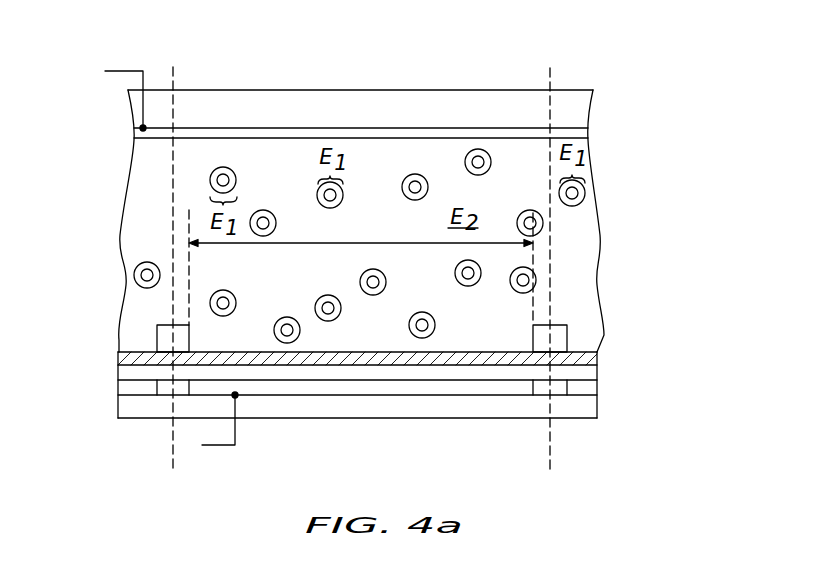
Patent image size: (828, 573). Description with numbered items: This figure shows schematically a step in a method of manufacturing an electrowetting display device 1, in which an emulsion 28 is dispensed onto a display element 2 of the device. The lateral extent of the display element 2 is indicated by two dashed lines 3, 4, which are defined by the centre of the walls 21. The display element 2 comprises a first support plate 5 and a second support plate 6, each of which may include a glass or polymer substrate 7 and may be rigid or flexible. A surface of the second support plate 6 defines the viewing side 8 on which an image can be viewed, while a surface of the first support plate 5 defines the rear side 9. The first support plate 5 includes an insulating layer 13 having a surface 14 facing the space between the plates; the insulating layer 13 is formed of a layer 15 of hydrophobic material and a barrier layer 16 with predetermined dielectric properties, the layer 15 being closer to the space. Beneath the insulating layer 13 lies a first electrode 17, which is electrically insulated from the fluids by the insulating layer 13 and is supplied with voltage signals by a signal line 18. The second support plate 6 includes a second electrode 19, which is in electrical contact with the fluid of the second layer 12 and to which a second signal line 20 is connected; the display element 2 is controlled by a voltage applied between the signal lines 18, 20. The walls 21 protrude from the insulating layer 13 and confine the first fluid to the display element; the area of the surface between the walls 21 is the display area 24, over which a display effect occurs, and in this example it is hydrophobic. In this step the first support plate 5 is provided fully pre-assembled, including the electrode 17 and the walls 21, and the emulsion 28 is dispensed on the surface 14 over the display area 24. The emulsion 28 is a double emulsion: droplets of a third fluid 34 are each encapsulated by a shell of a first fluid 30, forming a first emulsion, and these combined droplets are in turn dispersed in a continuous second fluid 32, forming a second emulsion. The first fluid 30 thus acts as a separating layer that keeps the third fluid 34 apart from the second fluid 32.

The electrowetting display device 1 is at (373, 196).
The display element 2 is at (360, 82).
The dashed line 3 is at (173, 73).
The dashed line 4 is at (550, 72).
The first support plate 5 is at (403, 405).
The second support plate 6 is at (386, 82).
The substrate 7 is at (357, 414).
The viewing side 8 is at (263, 90).
The rear side 9 is at (322, 418).
The second layer of fluid 12 is at (593, 235).
The insulating layer 13 is at (384, 411).
The surface 14 is at (488, 352).
The layer 15 is at (372, 360).
The barrier layer 16 is at (280, 373).
The first electrode 17 is at (428, 388).
The signal line 18 is at (220, 448).
The second electrode 19 is at (160, 133).
The second signal line 20 is at (117, 70).
The walls 21 is at (163, 335).
The display area 24 is at (361, 267).
The emulsion 28 is at (428, 153).
The first fluid 30 is at (391, 219).
The second fluid 32 is at (195, 192).
The third fluid 34 is at (230, 182).